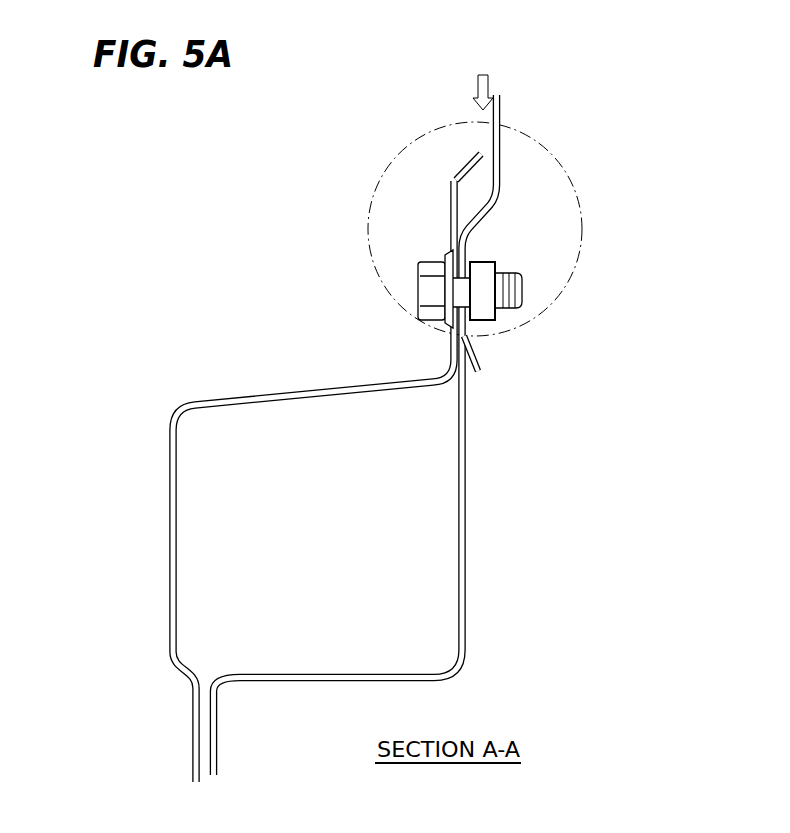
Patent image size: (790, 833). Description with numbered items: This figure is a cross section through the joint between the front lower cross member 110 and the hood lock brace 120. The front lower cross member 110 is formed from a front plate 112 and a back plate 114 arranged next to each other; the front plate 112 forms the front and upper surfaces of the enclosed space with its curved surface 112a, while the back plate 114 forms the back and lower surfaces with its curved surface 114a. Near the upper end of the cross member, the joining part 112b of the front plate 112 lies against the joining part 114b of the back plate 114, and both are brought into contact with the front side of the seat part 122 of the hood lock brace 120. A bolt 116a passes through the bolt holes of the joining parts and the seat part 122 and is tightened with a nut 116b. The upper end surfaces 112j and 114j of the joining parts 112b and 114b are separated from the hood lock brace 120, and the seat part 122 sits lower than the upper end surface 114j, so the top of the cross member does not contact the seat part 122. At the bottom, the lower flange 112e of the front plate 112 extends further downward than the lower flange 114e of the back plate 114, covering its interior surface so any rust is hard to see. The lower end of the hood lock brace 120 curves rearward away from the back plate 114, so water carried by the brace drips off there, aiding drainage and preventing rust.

The front lower cross member 110 is at (69, 621).
The front plate 112 is at (167, 624).
The curved surface 112a is at (262, 381).
The joining part 112b is at (450, 214).
The lower flange 112e is at (193, 752).
The upper end surface 112j is at (479, 151).
The back plate 114 is at (252, 684).
The curved surface 114a is at (467, 540).
The joining part 114b is at (486, 206).
The lower flange 114e is at (217, 757).
The upper end surface 114j is at (456, 206).
The bolt 116a is at (428, 290).
The nut 116b is at (490, 328).
The hood lock brace 120 is at (506, 98).
The seat part 122 is at (484, 242).